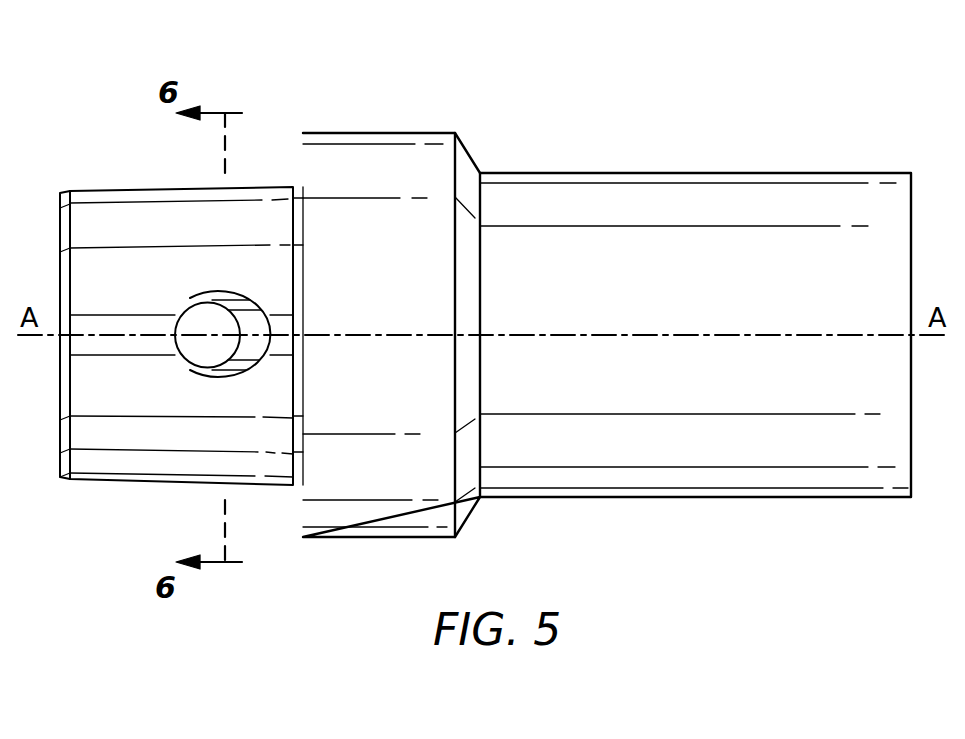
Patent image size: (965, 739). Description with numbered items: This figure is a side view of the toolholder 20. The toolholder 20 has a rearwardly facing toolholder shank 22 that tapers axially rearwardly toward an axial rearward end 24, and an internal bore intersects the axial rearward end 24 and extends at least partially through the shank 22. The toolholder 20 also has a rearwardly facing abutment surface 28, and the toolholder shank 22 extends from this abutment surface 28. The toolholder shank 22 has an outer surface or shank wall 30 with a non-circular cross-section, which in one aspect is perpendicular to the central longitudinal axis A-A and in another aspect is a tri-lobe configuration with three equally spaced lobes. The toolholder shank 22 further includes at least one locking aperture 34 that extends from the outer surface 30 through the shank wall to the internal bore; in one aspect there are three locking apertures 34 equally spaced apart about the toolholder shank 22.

The toolholder 20 is at (731, 124).
The toolholder shank 22 is at (261, 176).
The axial rearward end 24 is at (60, 425).
The abutment surface 28 is at (303, 513).
The outer surface 30 is at (115, 188).
The locking aperture 34 is at (204, 355).